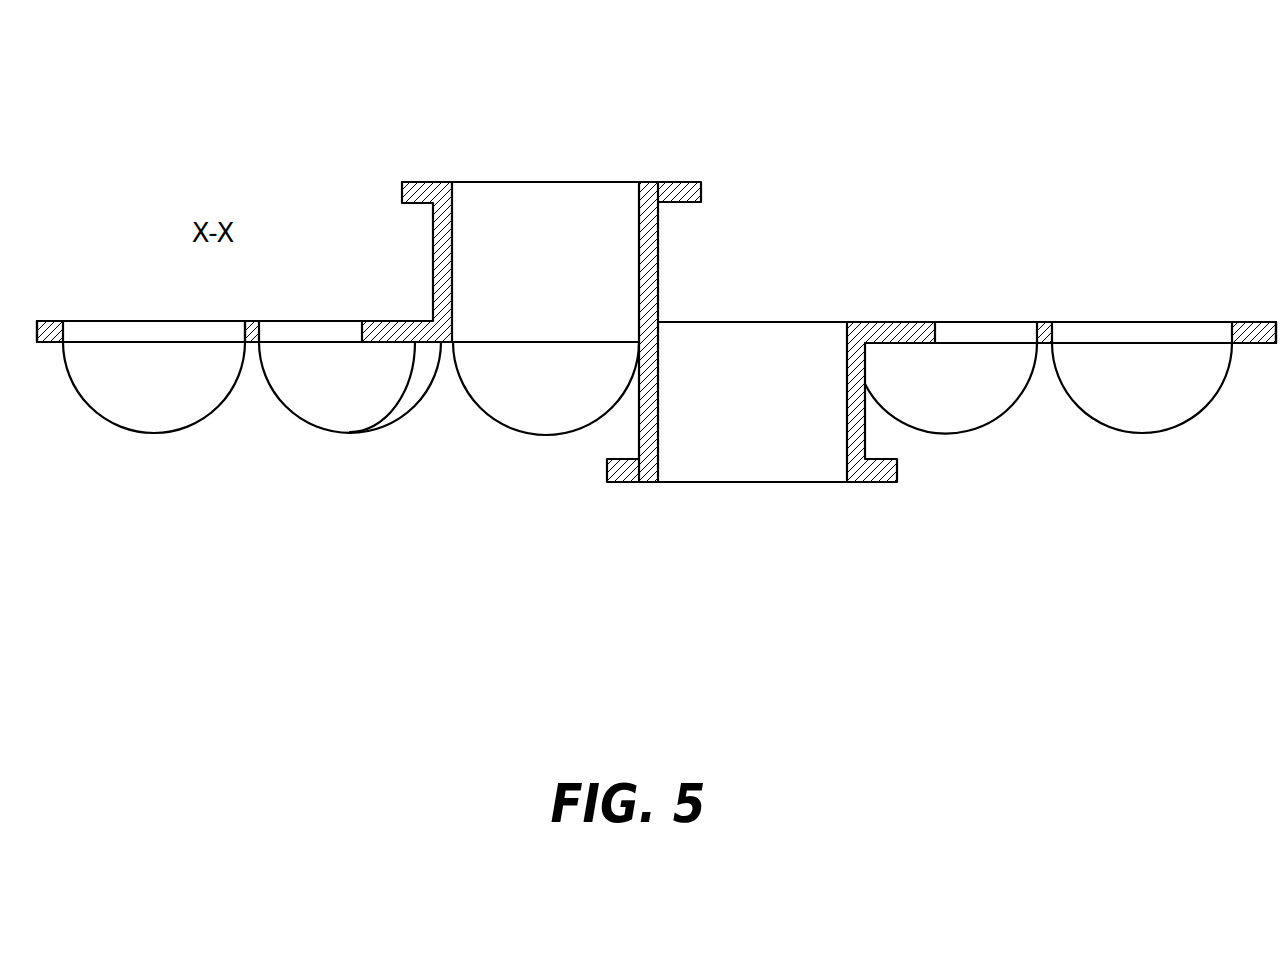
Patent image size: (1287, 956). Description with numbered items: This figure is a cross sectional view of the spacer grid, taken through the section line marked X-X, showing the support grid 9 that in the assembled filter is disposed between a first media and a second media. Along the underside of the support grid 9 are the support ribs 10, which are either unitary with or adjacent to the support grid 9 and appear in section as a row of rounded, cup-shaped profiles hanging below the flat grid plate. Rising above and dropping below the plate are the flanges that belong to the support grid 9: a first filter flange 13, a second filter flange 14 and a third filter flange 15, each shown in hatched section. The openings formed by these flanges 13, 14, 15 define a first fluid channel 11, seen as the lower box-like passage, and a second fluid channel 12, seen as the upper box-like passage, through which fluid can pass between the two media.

The support grid 9 is at (45, 320).
The support ribs 10 is at (147, 413).
The first fluid channel 11 is at (730, 460).
The second fluid channel 12 is at (522, 227).
The first filter flange 13 is at (632, 480).
The second filter flange 14 is at (373, 326).
The third filter flange 15 is at (662, 182).